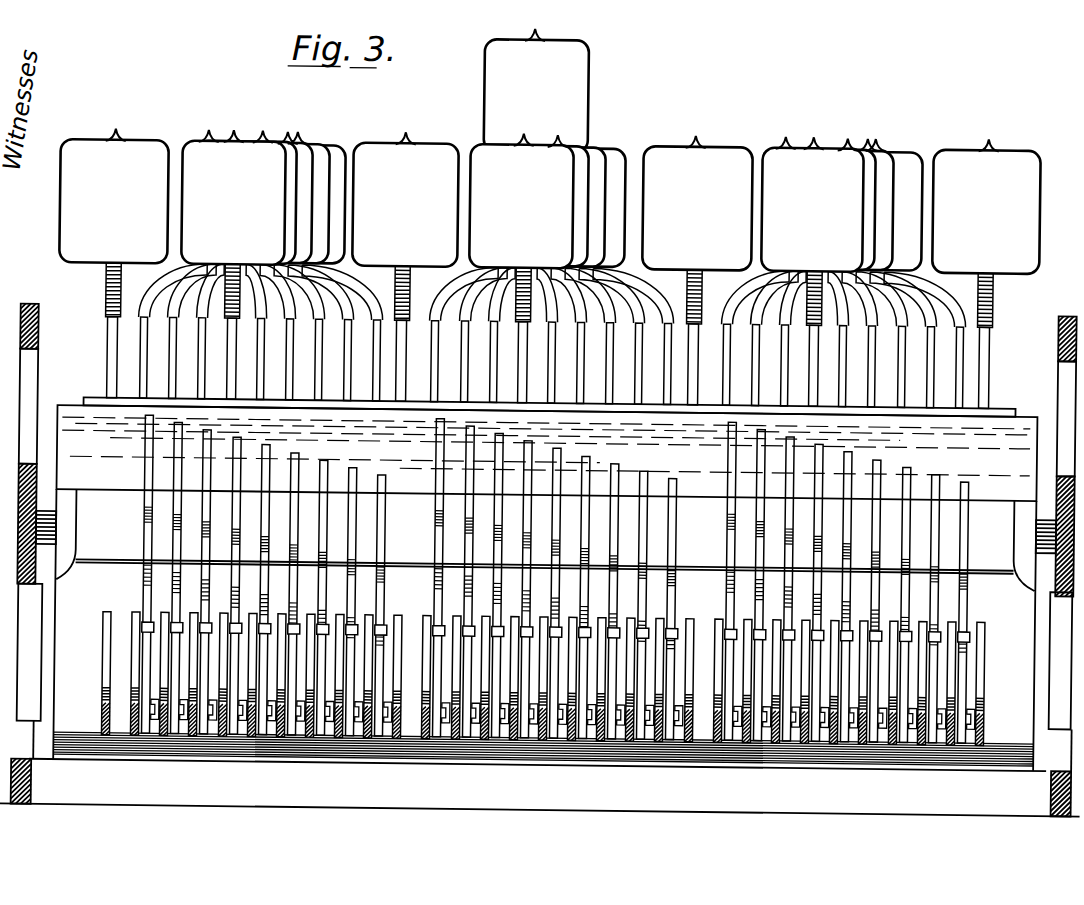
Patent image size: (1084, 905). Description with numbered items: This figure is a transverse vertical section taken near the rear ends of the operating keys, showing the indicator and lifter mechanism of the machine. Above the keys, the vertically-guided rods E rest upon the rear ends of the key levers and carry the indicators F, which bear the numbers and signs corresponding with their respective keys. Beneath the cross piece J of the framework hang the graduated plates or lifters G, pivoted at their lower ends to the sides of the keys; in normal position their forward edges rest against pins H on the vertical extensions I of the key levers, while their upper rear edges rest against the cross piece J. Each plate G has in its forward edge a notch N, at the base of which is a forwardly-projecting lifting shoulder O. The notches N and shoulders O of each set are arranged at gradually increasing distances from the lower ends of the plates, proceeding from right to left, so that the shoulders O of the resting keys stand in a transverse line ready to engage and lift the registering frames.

The indicators F is at (1032, 236).
The vertically-guided rods E is at (984, 369).
The cross piece J is at (546, 449).
The notches N is at (727, 516).
The lifting fingers or shoulders O is at (143, 537).
The graduated plates or lifters G is at (963, 532).
The pins H is at (973, 627).
The vertical extensions I is at (956, 664).